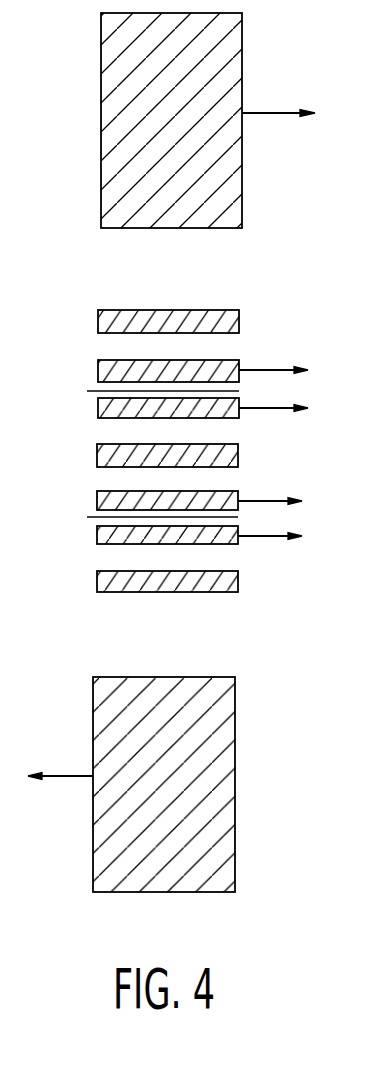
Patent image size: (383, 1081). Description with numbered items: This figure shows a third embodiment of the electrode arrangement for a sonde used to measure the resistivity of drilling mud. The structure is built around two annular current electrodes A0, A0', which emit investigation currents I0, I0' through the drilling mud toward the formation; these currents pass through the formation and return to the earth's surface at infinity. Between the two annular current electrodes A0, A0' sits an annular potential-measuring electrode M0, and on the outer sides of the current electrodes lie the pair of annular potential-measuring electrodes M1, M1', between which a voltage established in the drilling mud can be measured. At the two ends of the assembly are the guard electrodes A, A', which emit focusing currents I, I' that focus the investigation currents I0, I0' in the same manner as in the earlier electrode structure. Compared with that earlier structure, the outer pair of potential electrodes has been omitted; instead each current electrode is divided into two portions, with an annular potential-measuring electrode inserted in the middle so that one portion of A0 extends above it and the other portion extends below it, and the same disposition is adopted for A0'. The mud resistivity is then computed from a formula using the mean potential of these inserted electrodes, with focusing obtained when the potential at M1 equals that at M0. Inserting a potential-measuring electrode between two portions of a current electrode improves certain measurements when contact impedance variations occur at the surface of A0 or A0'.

The guard electrode A is at (146, 120).
The focusing current I is at (278, 99).
The annular potential-measuring electrode M1 is at (137, 303).
The annular current electrode A0 is at (136, 372).
The investigation current I0 is at (286, 389).
The annular potential-measuring electrode M0 is at (100, 451).
The investigation current I0' is at (288, 519).
The annular current electrode A0' is at (131, 551).
The annular potential-measuring electrode M1' is at (131, 602).
The guard electrode A' is at (195, 784).
The focusing current I' is at (60, 759).